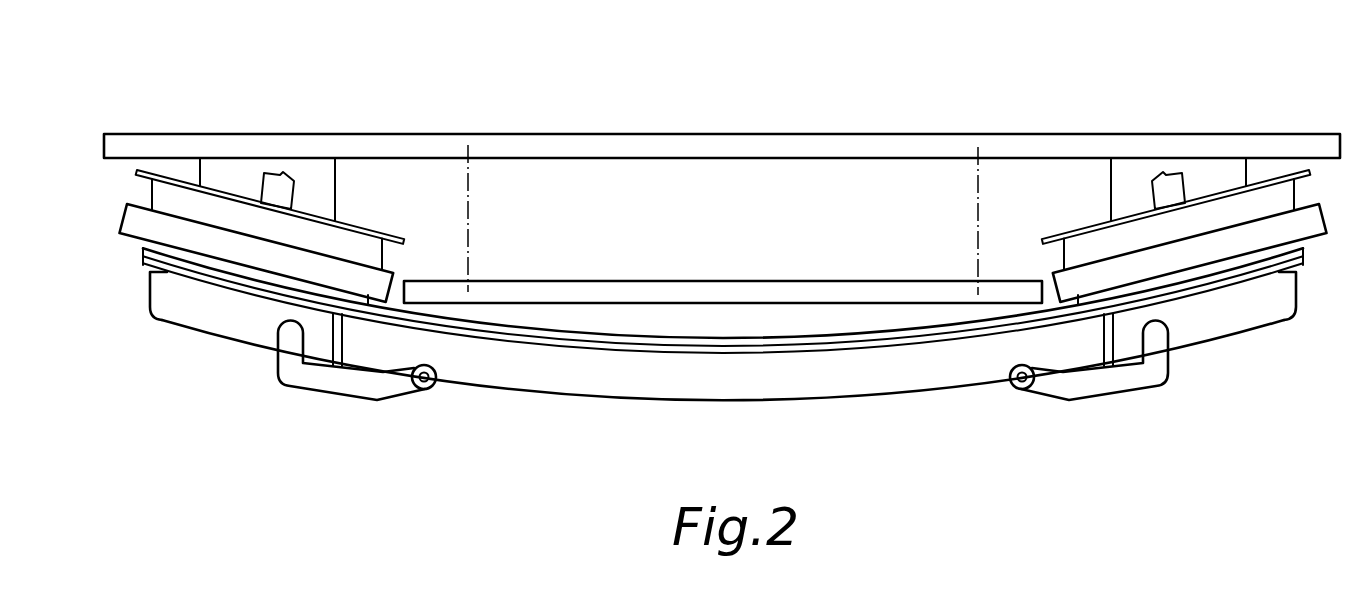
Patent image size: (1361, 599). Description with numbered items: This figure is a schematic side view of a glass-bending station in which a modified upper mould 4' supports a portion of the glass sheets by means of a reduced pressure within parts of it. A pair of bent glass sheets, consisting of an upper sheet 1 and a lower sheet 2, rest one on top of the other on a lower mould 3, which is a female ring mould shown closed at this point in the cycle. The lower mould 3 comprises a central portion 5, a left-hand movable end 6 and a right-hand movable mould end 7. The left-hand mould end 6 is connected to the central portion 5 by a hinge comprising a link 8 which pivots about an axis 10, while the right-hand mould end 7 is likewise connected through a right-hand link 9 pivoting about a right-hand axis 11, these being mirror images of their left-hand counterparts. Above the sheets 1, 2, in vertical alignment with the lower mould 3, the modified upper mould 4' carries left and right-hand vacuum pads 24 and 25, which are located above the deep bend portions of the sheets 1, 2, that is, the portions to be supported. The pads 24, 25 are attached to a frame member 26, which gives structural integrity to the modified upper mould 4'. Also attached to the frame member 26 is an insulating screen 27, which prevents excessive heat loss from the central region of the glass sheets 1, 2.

The modified upper mould 4' is at (721, 165).
The frame member 26 is at (953, 143).
The insulating screen 27 is at (728, 290).
The left-hand vacuum pad 24 is at (175, 232).
The right-hand vacuum pad 25 is at (1277, 240).
The lower mould 3 is at (701, 367).
The upper sheet 1 is at (145, 267).
The lower sheet 2 is at (167, 273).
The central portion 5 is at (815, 385).
The left-hand movable end 6 is at (237, 322).
The right-hand movable mould end 7 is at (1230, 322).
The link 8 is at (322, 385).
The right-hand link 9 is at (1115, 385).
The axis 10 is at (426, 389).
The right-hand axis 11 is at (1018, 389).